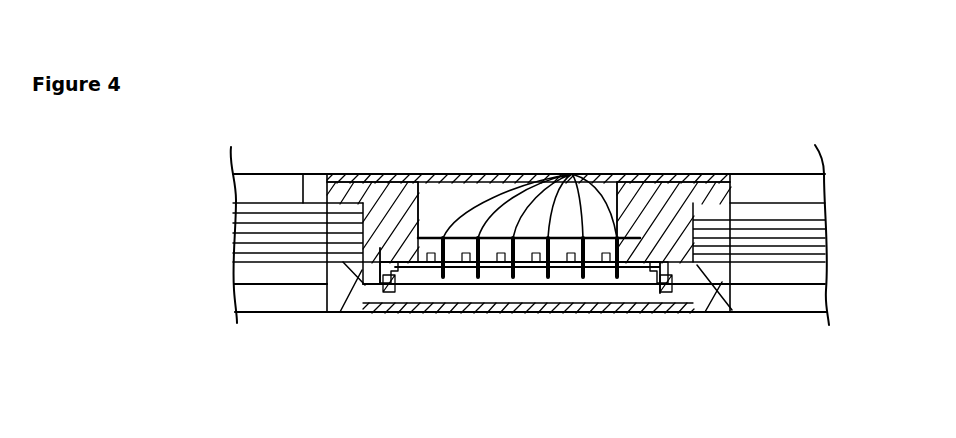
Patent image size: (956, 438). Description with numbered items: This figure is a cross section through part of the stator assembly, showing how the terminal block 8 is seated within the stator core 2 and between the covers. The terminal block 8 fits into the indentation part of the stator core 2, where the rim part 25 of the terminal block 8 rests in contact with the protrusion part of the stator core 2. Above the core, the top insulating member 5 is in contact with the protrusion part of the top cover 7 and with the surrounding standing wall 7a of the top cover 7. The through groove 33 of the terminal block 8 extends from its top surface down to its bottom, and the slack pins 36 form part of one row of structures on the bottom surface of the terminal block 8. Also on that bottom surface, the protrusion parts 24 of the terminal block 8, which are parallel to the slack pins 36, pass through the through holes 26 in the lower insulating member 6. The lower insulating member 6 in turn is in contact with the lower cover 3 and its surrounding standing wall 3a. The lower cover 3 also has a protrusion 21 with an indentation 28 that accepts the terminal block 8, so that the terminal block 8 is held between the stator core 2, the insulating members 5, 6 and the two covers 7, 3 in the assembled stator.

The stator core 2 is at (313, 174).
The lower cover 3 is at (488, 312).
The surrounding standing wall 3a is at (280, 297).
The top insulating member 5 is at (263, 212).
The lower insulating member 6 is at (328, 285).
The top cover 7 is at (521, 165).
The surrounding standing wall 7a is at (282, 174).
The terminal block 8 is at (415, 174).
The protrusion 21 is at (361, 279).
The protrusion parts 24 is at (390, 296).
The rim part 25 is at (385, 201).
The through holes 26 is at (398, 283).
The indentation 28 is at (540, 292).
The through groove 33 is at (620, 188).
The slack pins 36 is at (572, 174).